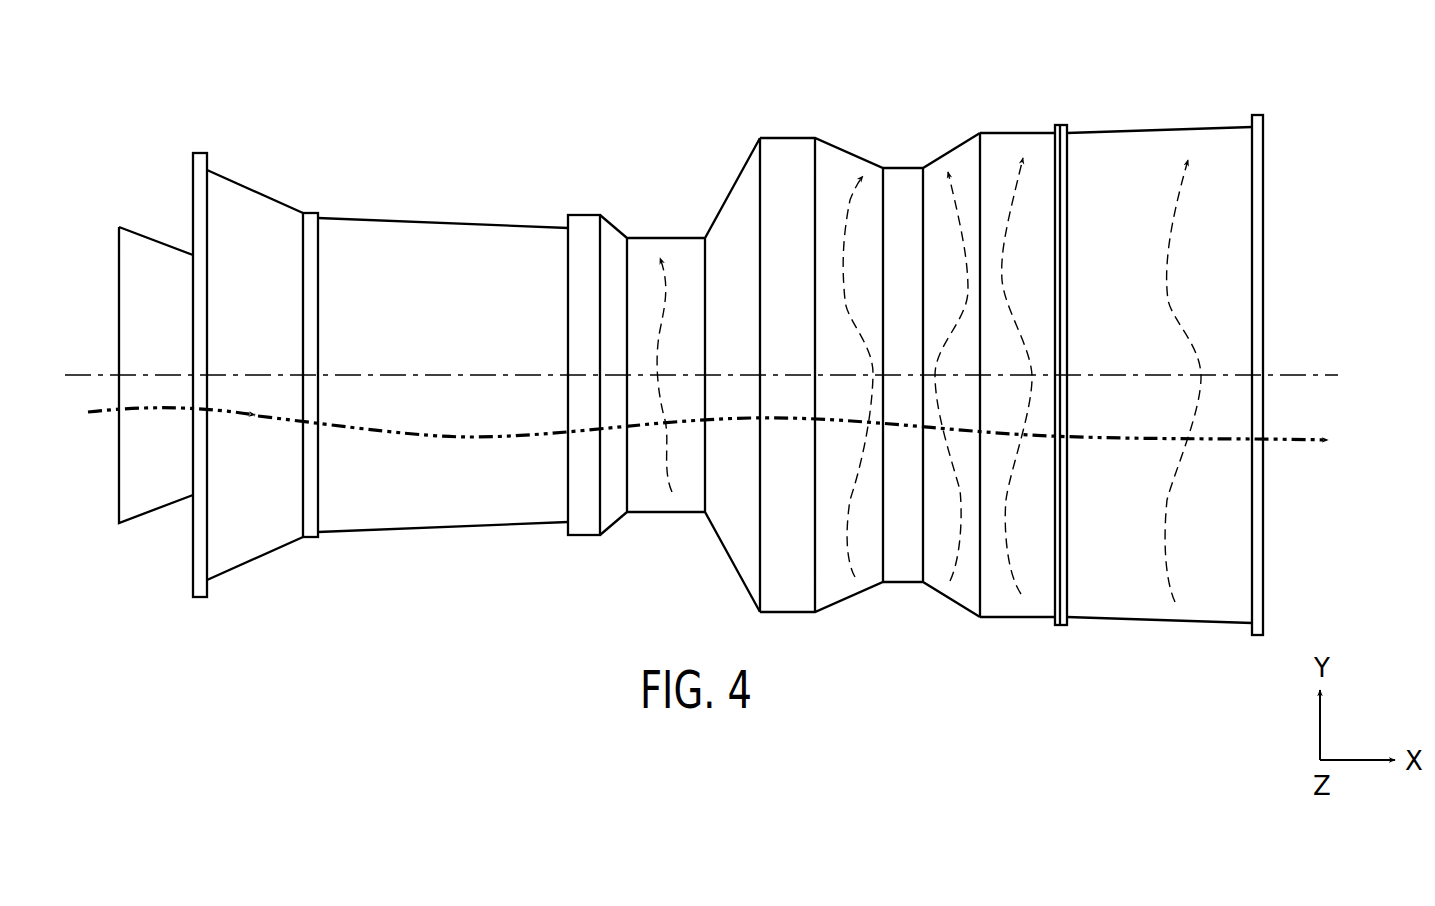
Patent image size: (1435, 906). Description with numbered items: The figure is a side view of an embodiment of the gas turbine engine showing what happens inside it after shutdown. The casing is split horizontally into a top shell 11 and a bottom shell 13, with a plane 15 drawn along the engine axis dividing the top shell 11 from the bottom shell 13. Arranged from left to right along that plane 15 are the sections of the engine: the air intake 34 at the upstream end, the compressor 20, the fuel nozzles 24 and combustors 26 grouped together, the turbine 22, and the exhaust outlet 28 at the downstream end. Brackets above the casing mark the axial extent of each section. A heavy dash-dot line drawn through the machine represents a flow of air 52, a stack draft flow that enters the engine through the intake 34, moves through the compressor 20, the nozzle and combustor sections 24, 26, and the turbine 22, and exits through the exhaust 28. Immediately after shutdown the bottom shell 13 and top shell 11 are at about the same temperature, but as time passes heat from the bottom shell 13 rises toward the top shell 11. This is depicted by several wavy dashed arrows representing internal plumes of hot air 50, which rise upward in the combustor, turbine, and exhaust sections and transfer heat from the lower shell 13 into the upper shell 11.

The top shell 11 is at (1292, 204).
The bottom shell 13 is at (1293, 548).
The plane 15 is at (1299, 375).
The compressor 20 is at (567, 83).
The turbine 22 is at (977, 83).
The fuel nozzles 24 is at (667, 318).
The combustors 26 is at (755, 83).
The exhaust outlet 28 is at (1260, 83).
The air intake 34 is at (120, 83).
The internal plumes of hot air 50 is at (675, 470).
The flow of air 52 is at (466, 440).